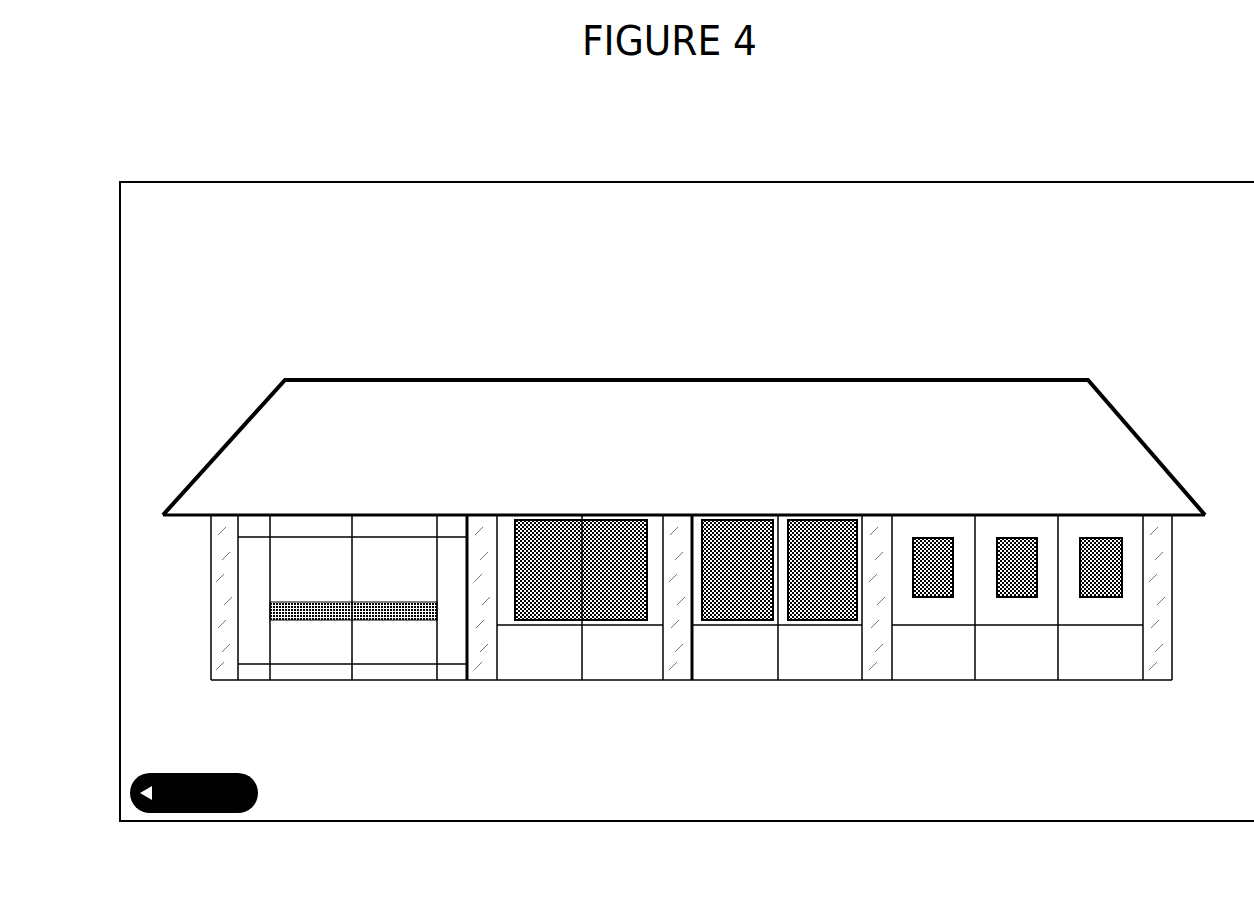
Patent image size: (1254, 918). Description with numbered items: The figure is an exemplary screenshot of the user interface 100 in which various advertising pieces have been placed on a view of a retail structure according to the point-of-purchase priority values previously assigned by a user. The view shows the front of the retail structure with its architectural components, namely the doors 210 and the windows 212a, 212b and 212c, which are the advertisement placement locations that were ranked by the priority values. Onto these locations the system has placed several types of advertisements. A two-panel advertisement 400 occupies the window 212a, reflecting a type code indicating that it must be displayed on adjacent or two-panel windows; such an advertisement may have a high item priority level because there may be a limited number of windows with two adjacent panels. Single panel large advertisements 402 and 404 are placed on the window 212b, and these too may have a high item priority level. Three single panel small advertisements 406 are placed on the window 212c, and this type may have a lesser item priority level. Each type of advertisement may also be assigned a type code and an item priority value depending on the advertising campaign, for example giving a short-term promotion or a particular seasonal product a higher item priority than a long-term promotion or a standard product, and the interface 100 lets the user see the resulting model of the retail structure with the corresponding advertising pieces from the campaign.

The user interface 100 is at (115, 237).
The doors 210 is at (358, 681).
The window 212a is at (595, 677).
The window 212b is at (785, 677).
The window 212c is at (1015, 677).
The two-panel advertisement 400 is at (563, 535).
The single panel large advertisement 402 is at (744, 535).
The single panel large advertisement 404 is at (823, 535).
The single panel small advertisement 406 is at (1100, 538).